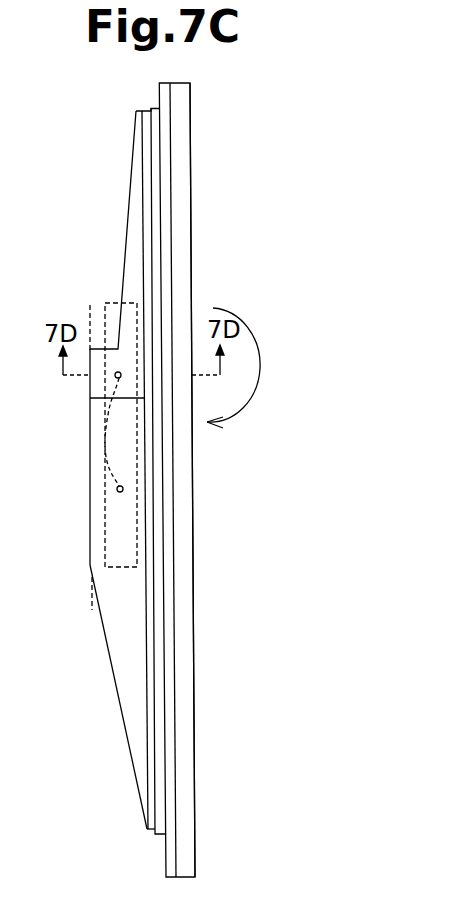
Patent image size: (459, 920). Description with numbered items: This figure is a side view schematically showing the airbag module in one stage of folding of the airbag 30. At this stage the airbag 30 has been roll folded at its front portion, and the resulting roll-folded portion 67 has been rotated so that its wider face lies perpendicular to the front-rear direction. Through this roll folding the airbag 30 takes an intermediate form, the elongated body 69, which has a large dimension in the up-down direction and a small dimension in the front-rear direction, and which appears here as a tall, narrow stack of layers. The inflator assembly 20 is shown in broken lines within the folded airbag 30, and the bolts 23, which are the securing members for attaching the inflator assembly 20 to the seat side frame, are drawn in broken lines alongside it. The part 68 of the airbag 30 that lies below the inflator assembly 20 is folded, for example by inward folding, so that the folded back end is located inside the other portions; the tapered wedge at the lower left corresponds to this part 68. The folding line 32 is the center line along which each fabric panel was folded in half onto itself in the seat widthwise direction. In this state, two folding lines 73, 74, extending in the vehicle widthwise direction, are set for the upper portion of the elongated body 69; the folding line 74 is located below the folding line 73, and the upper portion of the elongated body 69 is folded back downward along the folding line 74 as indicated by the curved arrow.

The roll-folded portion 67 is at (211, 480).
The airbag 30 is at (248, 199).
The elongated body 69 is at (188, 626).
The folding line 73 is at (208, 253).
The folding line 74 is at (205, 362).
The part of the airbag below the inflator assembly 68 is at (123, 685).
The folding line 32 is at (92, 600).
The inflator assembly 20 is at (104, 318).
The bolts 23 is at (100, 421).